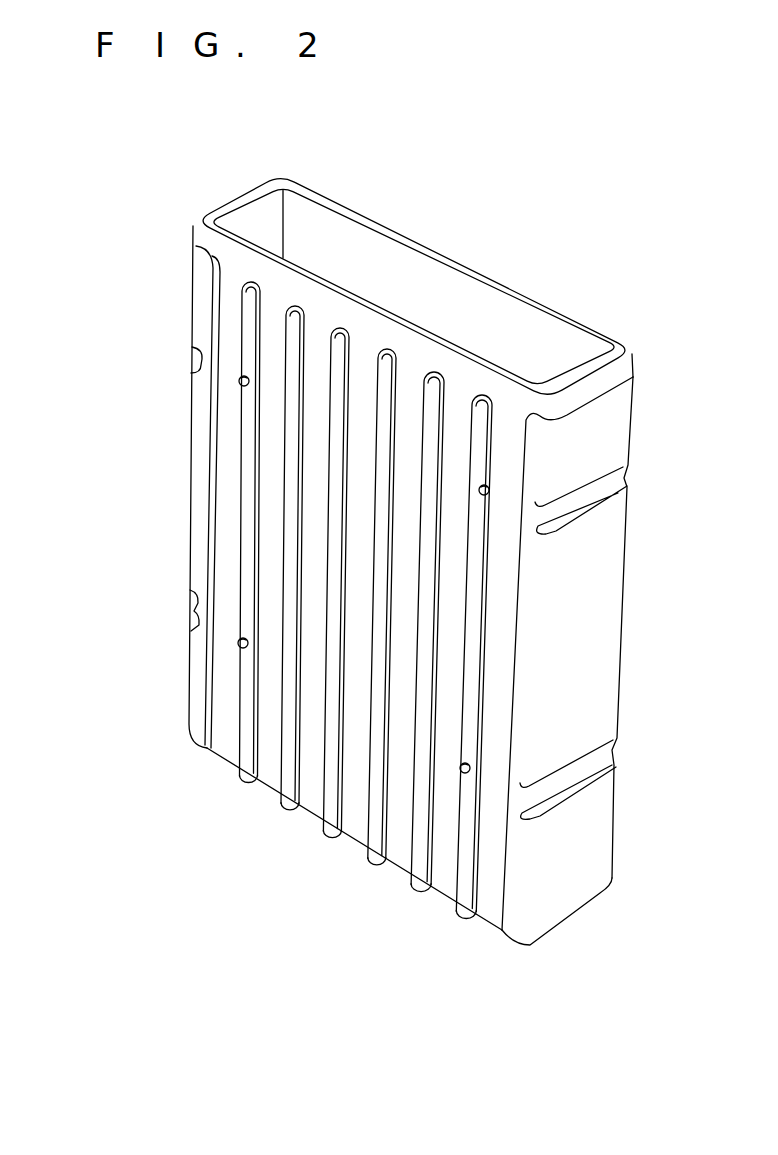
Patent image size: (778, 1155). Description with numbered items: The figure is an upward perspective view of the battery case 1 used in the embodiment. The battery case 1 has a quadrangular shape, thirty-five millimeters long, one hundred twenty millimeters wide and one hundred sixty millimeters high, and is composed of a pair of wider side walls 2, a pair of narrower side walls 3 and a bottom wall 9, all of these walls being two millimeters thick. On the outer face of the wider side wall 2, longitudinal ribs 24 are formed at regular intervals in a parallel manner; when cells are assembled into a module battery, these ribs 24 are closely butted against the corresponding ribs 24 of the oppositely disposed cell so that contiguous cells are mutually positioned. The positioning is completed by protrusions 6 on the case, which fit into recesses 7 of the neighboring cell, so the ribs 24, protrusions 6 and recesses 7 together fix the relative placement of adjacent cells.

The battery case 1 is at (168, 288).
The wider side wall 2 is at (326, 309).
The narrower side wall 3 is at (598, 606).
The protrusion 6 is at (238, 381).
The recess 7 is at (238, 643).
The bottom wall 9 is at (353, 840).
The longitudinal rib 24 is at (247, 507).